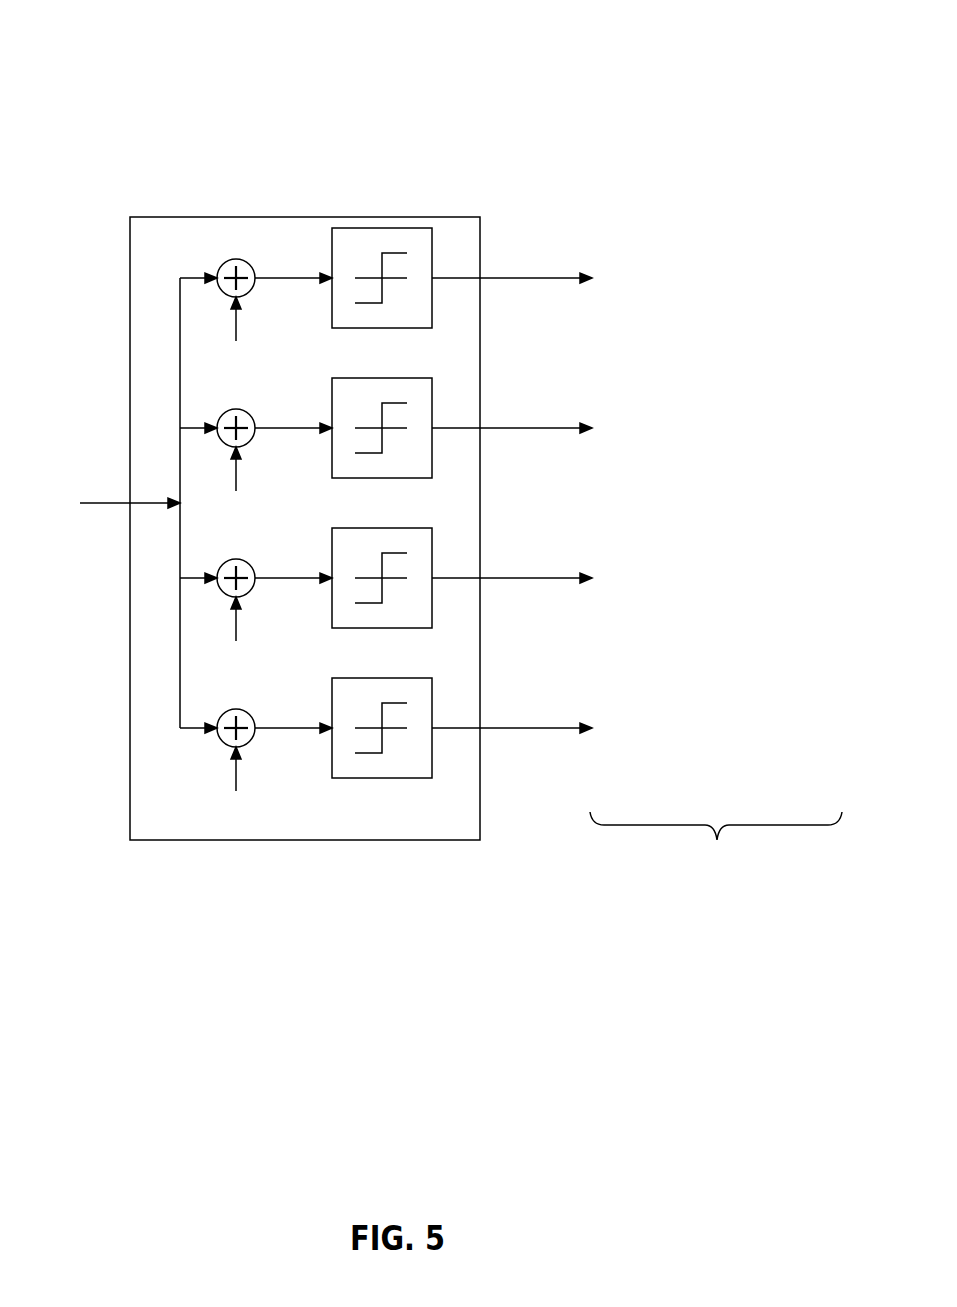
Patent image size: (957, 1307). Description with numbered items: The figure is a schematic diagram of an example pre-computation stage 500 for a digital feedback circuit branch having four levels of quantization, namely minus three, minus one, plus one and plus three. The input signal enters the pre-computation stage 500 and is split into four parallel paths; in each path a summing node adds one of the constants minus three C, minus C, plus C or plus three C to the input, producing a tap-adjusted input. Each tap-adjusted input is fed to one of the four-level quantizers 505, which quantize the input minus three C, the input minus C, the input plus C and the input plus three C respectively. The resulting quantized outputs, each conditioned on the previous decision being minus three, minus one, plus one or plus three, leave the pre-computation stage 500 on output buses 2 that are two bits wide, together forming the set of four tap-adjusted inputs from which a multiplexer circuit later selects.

The pre-computation stage 500 is at (114, 34).
The 4-level quantizer 505 is at (402, 240).
The 2-bit output bus 2 is at (550, 263).